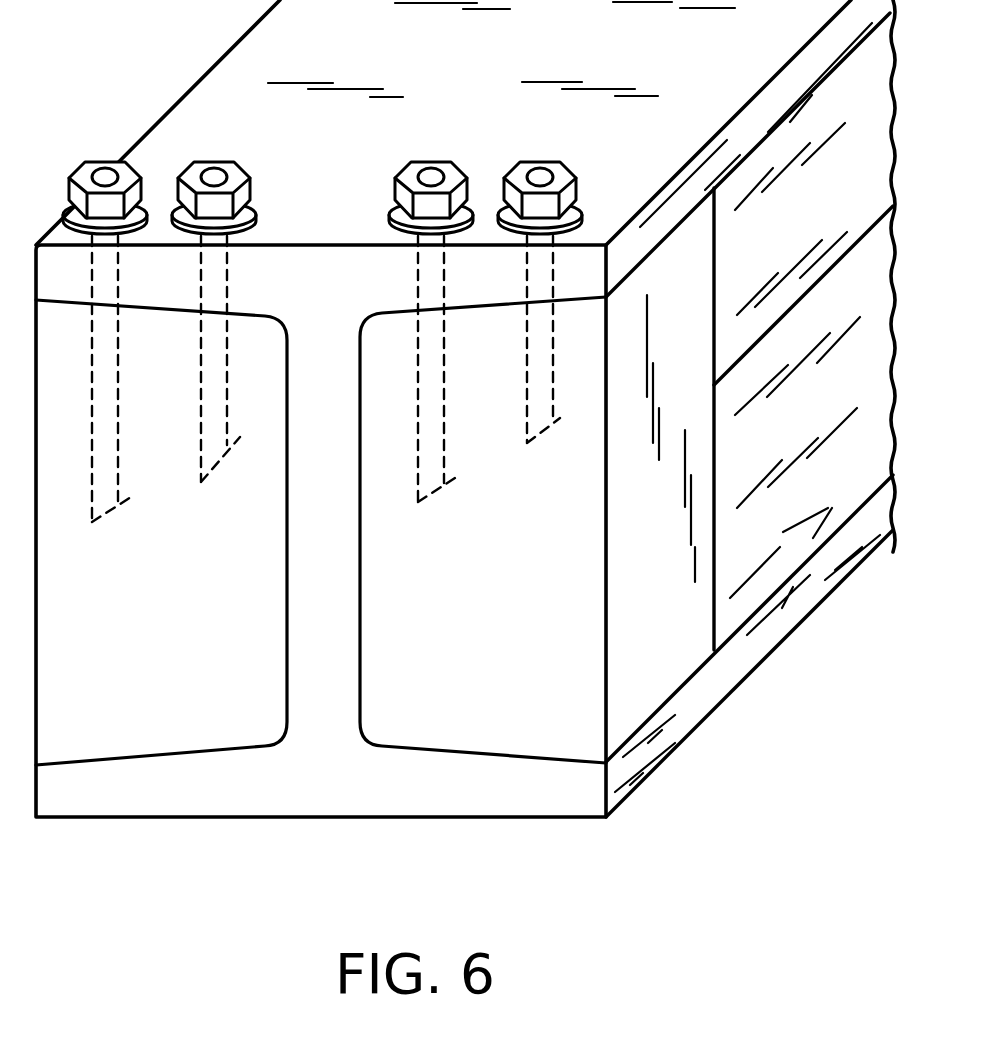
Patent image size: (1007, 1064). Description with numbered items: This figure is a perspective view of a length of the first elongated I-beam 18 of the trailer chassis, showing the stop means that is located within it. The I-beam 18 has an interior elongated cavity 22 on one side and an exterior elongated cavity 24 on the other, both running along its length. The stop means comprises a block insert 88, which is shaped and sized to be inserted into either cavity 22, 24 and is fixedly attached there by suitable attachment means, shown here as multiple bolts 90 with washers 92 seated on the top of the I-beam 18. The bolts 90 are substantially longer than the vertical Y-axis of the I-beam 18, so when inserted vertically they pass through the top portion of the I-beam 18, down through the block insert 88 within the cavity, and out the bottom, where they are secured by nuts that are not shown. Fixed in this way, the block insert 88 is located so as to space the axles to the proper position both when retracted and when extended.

The first elongated I-beam 18 is at (427, 797).
The interior elongated cavity 22 is at (483, 499).
The exterior elongated cavity 24 is at (161, 500).
The block insert 88 is at (693, 662).
The bolt 90 is at (127, 170).
The washer 92 is at (140, 214).